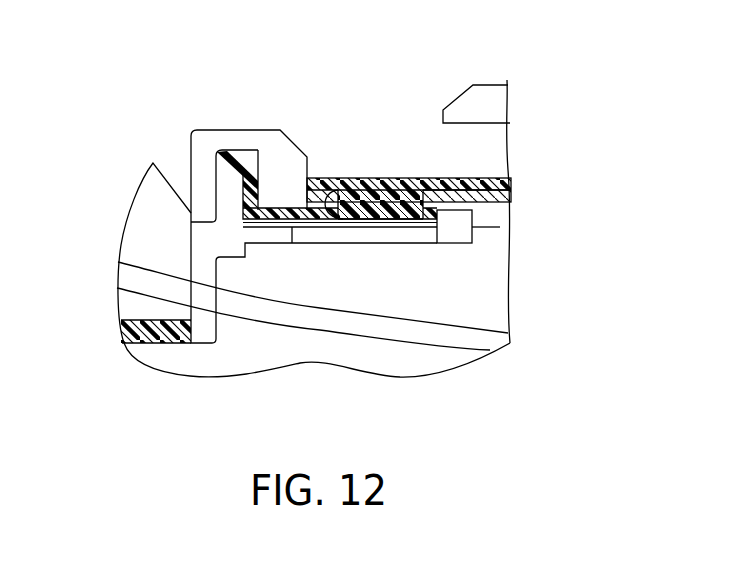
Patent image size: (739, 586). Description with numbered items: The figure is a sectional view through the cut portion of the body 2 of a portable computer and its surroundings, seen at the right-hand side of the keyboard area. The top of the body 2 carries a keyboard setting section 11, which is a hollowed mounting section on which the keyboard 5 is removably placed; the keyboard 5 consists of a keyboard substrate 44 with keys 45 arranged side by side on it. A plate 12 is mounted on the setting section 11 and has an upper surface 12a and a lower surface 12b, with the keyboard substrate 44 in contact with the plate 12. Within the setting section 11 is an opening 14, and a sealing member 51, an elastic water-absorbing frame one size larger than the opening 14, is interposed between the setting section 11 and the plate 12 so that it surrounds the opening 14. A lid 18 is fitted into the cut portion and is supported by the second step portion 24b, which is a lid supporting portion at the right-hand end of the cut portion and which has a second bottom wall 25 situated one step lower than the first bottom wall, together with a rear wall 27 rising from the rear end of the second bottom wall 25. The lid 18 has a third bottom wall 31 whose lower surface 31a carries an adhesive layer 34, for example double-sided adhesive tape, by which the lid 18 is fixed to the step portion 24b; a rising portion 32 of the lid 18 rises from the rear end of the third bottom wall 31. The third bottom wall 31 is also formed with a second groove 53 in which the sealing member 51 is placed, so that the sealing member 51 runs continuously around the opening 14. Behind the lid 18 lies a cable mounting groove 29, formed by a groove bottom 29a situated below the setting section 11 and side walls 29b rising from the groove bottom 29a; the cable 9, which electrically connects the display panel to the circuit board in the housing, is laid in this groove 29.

The body 2 is at (82, 82).
The keyboard 5 is at (407, 170).
The cable 9 is at (490, 337).
The keyboard setting section 11 is at (266, 252).
The plate 12 is at (522, 193).
The upper surface 12a is at (495, 177).
The lower surface 12b is at (483, 203).
The opening 14 is at (500, 227).
The lid 18 is at (268, 156).
The second step portion 24b is at (417, 235).
The second bottom wall 25 is at (308, 229).
The rear wall 27 is at (230, 182).
The cable mounting groove 29 is at (126, 303).
The groove bottom 29a is at (172, 332).
The side walls 29b is at (147, 230).
The third bottom wall 31 is at (300, 210).
The lower surface 31a is at (378, 221).
The rising portion 32 is at (251, 162).
The adhesive layer 34 is at (332, 225).
The keyboard substrate 44 is at (433, 185).
The keys 45 is at (488, 98).
The sealing member 51 is at (380, 207).
The second groove 53 is at (330, 178).